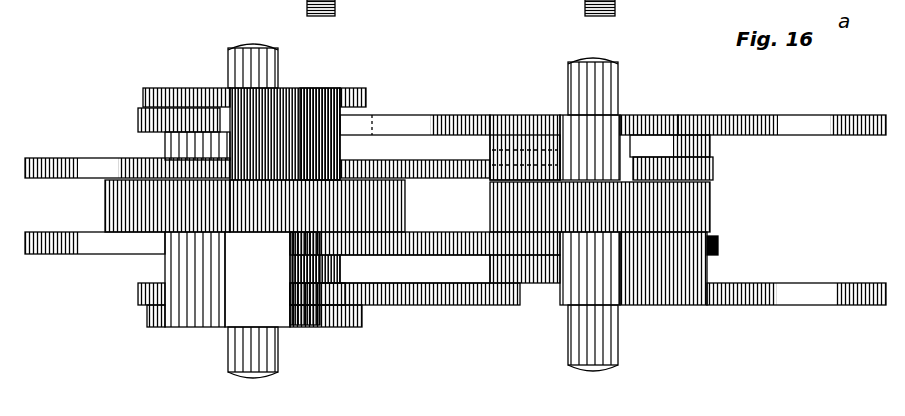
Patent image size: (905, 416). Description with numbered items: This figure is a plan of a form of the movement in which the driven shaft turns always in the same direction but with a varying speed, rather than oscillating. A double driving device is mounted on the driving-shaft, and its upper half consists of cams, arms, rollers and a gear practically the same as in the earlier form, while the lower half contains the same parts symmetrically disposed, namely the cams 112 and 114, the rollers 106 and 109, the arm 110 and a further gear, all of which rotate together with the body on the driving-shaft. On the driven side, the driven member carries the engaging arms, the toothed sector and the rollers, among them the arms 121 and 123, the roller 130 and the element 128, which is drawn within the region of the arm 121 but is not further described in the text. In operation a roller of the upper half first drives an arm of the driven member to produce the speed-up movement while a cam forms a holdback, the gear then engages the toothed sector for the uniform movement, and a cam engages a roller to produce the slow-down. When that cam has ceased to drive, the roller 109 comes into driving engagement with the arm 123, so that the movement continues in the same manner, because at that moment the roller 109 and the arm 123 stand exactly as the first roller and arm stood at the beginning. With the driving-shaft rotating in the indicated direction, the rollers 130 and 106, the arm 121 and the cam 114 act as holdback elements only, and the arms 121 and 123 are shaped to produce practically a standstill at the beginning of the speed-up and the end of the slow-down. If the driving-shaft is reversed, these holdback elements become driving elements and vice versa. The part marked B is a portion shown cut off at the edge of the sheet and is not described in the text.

The cam 114 is at (82, 250).
The roller 109 is at (137, 294).
The arm 110 is at (146, 316).
The frame B is at (336, 8).
The roller 106 is at (358, 125).
The arm 121 is at (460, 117).
The clutch member 128 is at (492, 165).
The cam 112 is at (389, 165).
The roller 130 is at (700, 272).
The arm 123 is at (806, 297).